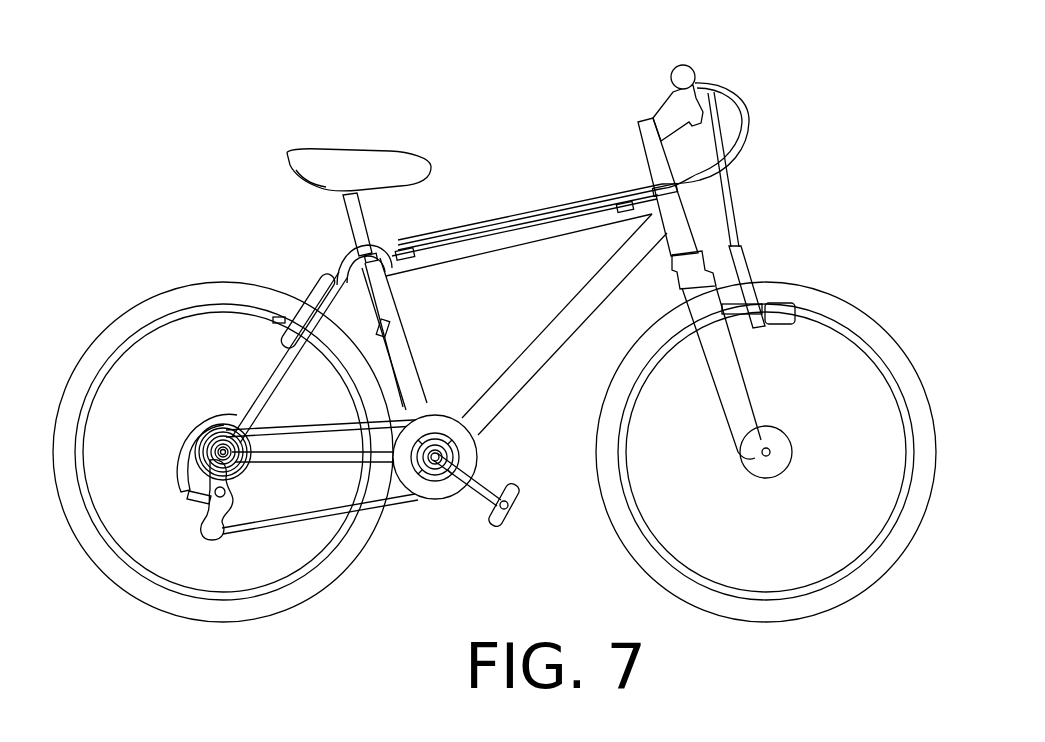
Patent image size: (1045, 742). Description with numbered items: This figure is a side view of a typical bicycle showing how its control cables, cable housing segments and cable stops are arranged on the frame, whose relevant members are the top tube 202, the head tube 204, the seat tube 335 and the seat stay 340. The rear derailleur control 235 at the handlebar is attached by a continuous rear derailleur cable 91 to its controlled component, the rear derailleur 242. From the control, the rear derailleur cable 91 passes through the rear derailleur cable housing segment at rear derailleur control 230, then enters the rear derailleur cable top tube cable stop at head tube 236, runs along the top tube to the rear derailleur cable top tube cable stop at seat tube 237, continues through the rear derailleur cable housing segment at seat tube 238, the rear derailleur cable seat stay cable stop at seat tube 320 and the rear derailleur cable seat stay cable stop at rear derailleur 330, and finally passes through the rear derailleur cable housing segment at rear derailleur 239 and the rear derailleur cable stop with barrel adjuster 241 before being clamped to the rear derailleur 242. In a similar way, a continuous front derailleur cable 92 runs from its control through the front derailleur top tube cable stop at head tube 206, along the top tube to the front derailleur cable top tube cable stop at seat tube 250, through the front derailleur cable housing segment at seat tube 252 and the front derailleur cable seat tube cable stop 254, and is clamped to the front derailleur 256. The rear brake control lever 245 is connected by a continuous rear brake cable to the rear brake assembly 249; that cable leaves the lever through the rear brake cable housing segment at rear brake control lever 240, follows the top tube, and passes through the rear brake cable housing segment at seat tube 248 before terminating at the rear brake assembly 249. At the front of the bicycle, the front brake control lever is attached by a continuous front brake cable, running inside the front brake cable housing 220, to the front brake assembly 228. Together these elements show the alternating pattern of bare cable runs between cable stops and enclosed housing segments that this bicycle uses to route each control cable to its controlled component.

The rear derailleur cable 91 is at (567, 226).
The front derailleur cable 92 is at (483, 233).
The top tube 202 is at (518, 246).
The head tube 204 is at (703, 240).
The front derailleur top tube cable stop at head tube 206 is at (633, 200).
The front brake cable housing 220 is at (727, 208).
The front brake assembly 228 is at (758, 285).
The rear derailleur cable housing segment at rear derailleur control 230 is at (748, 96).
The rear derailleur control 235 is at (669, 76).
The rear derailleur cable top tube cable stop at head tube 236 is at (615, 205).
The rear derailleur cable top tube cable stop at seat tube 237 is at (410, 267).
The rear derailleur cable housing segment at seat tube 238 is at (335, 262).
The rear derailleur cable housing segment at rear derailleur 239 is at (200, 492).
The rear brake cable housing segment at rear brake control lever 240 is at (752, 124).
The rear derailleur cable stop with barrel adjuster 241 is at (200, 504).
The rear derailleur 242 is at (230, 520).
The rear brake control lever 245 is at (700, 71).
The rear brake cable housing segment at seat tube 248 is at (340, 250).
The rear brake assembly 249 is at (280, 318).
The front derailleur cable top tube cable stop at seat tube 250 is at (410, 248).
The front derailleur cable housing segment at seat tube 252 is at (389, 328).
The front derailleur cable seat tube cable stop 254 is at (430, 340).
The front derailleur 256 is at (185, 425).
The rear derailleur cable seat stay cable stop at seat tube 320 is at (292, 300).
The rear derailleur cable seat stay cable stop at rear derailleur 330 is at (195, 440).
The seat tube 335 is at (418, 367).
The seat stay 340 is at (318, 447).